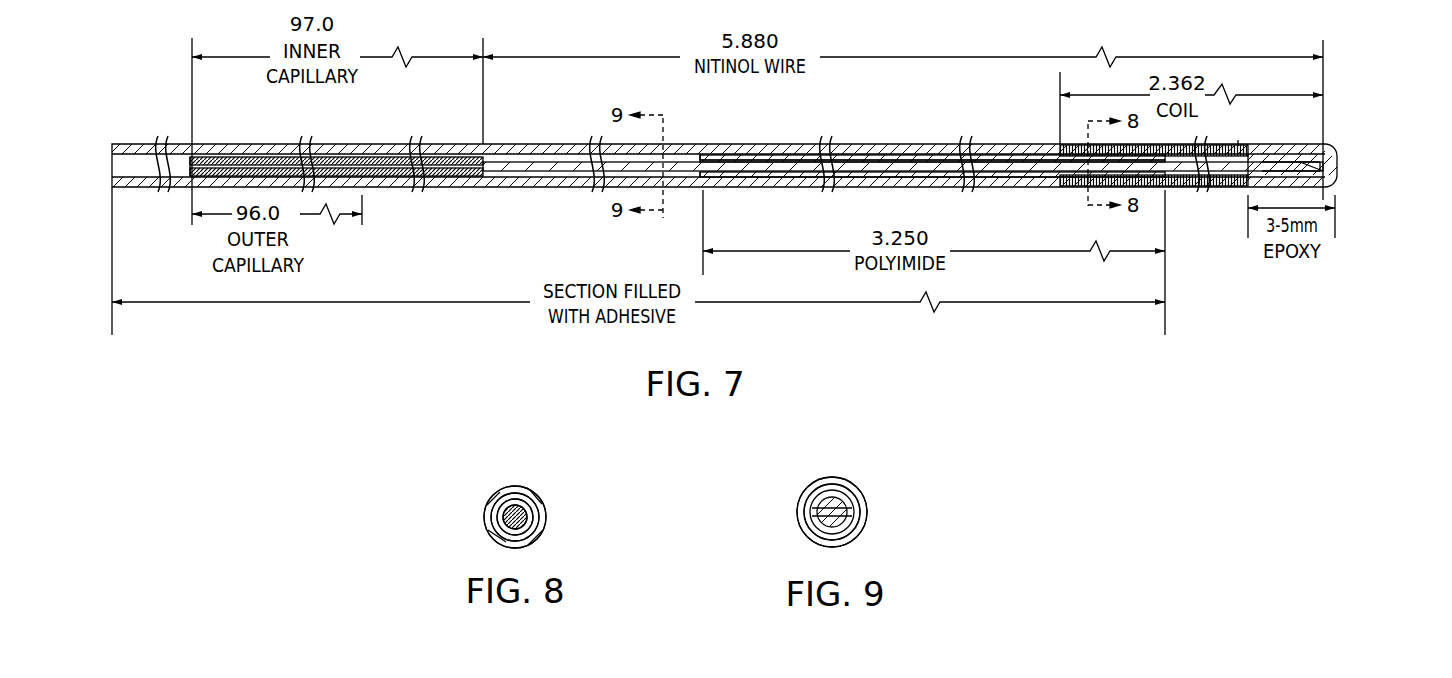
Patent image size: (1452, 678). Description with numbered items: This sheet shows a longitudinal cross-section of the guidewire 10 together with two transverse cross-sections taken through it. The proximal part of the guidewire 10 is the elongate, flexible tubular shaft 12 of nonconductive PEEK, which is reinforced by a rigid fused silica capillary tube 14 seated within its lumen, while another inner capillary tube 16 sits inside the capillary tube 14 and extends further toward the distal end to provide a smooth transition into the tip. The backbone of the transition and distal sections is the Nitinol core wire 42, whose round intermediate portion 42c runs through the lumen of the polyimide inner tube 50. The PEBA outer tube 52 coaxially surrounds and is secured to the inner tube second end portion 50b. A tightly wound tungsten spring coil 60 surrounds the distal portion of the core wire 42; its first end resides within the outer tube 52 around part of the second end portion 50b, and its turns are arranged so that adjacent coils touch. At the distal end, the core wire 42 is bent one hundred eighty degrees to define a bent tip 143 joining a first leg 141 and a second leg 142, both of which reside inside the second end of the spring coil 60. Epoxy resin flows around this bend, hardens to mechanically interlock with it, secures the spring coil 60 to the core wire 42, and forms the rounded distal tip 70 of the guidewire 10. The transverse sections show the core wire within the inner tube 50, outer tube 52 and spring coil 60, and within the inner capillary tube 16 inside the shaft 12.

In FIG. 7, the guidewire 10 is at (1238, 140).
In FIG. 8, the guidewire 10 is at (497, 450).
In FIG. 9, the guidewire 10 is at (835, 458).
In FIG. 7, the tubular shaft 12 is at (505, 145).
In FIG. 9, the tubular shaft 12 is at (855, 486).
In FIG. 7, the capillary tube 14 is at (352, 156).
In FIG. 7, the inner capillary tube 16 is at (378, 182).
In FIG. 9, the inner capillary tube 16 is at (816, 497).
In FIG. 7, the core wire 42 is at (875, 149).
In FIG. 8, the core wire 42 is at (494, 528).
In FIG. 9, the core wire 42 is at (814, 522).
In FIG. 7, the intermediate portion 42c is at (1005, 149).
In FIG. 7, the inner tube 50 is at (760, 152).
In FIG. 8, the inner tube 50 is at (540, 526).
In FIG. 7, the second end portion 50b is at (768, 176).
In FIG. 7, the outer tube 52 is at (930, 149).
In FIG. 8, the outer tube 52 is at (518, 492).
In FIG. 7, the spring coil 60 is at (1242, 145).
In FIG. 8, the spring coil 60 is at (536, 504).
In FIG. 7, the rounded distal tip 70 is at (1338, 152).
In FIG. 7, the first leg 141 is at (1263, 165).
In FIG. 7, the second leg 142 is at (1262, 183).
In FIG. 7, the bent tip 143 is at (1336, 170).